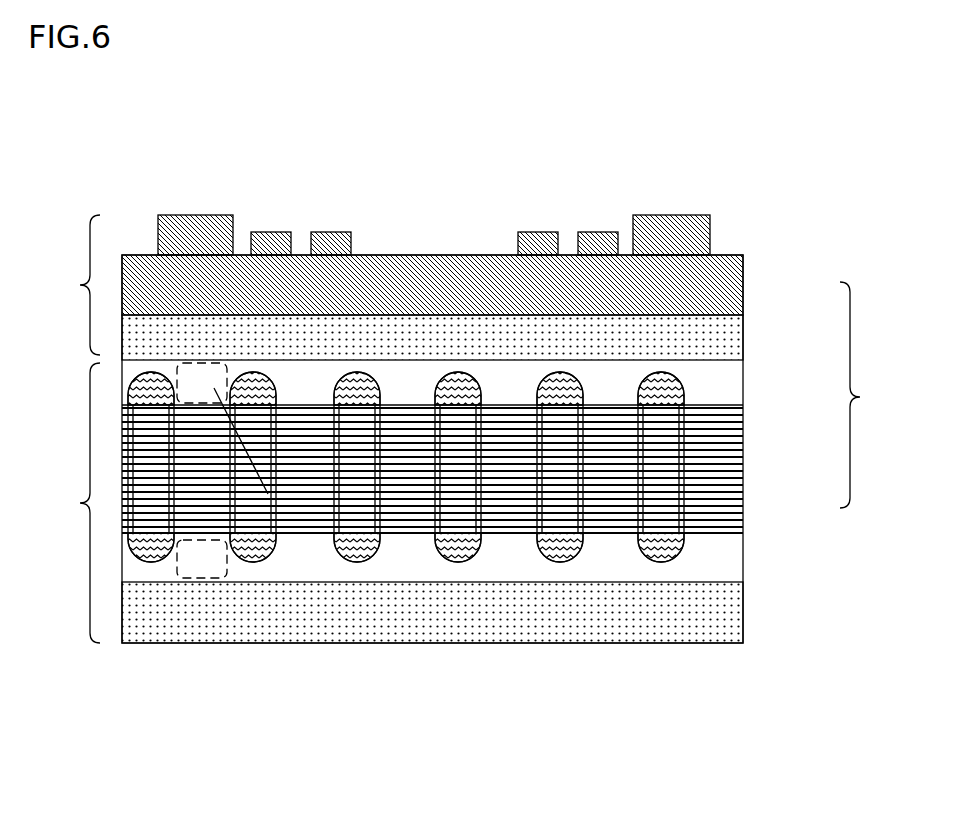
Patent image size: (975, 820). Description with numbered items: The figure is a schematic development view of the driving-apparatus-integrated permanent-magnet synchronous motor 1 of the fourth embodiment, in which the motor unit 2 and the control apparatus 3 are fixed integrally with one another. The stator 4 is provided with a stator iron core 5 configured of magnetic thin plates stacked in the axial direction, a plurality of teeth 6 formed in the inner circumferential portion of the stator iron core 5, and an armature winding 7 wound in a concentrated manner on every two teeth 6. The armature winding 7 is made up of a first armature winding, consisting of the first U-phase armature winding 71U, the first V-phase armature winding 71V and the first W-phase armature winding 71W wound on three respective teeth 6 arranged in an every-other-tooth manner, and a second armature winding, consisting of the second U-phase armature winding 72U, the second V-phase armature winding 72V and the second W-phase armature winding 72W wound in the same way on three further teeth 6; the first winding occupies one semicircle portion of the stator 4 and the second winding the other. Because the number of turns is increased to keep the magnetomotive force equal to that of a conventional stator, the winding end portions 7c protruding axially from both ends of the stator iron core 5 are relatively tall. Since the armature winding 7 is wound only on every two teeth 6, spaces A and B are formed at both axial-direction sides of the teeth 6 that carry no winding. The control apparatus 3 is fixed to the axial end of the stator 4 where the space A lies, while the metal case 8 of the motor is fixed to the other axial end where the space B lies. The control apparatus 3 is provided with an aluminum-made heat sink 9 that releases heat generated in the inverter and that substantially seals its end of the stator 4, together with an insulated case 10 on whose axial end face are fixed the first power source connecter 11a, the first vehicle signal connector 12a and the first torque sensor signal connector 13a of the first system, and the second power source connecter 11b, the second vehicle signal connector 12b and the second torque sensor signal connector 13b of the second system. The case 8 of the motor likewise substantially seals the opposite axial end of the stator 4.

The driving-apparatus-integrated permanent-magnet synchronous motor 1 is at (149, 158).
The motor unit 2 is at (68, 503).
The control apparatus 3 is at (68, 285).
The stator 4 is at (874, 395).
The stator iron core 5 is at (471, 461).
The teeth 6 is at (720, 462).
The armature winding 7 is at (728, 511).
The winding end portions 7c is at (633, 461).
The metal case 8 is at (725, 613).
The heat sink 9 is at (655, 328).
The insulated case 10 is at (412, 280).
The first power source connecter 11a is at (334, 237).
The first vehicle signal connector 12a is at (277, 237).
The first torque sensor signal connector 13a is at (200, 223).
The second power source connecter 11b is at (536, 237).
The second vehicle signal connector 12b is at (596, 237).
The second torque sensor signal connector 13b is at (676, 225).
The first U-phase armature winding 71U is at (150, 562).
The first V-phase armature winding 71V is at (253, 562).
The first W-phase armature winding 71W is at (363, 561).
The second U-phase armature winding 72U is at (462, 562).
The second V-phase armature winding 72V is at (560, 562).
The second W-phase armature winding 72W is at (658, 562).
The space A is at (262, 561).
The space B is at (193, 562).